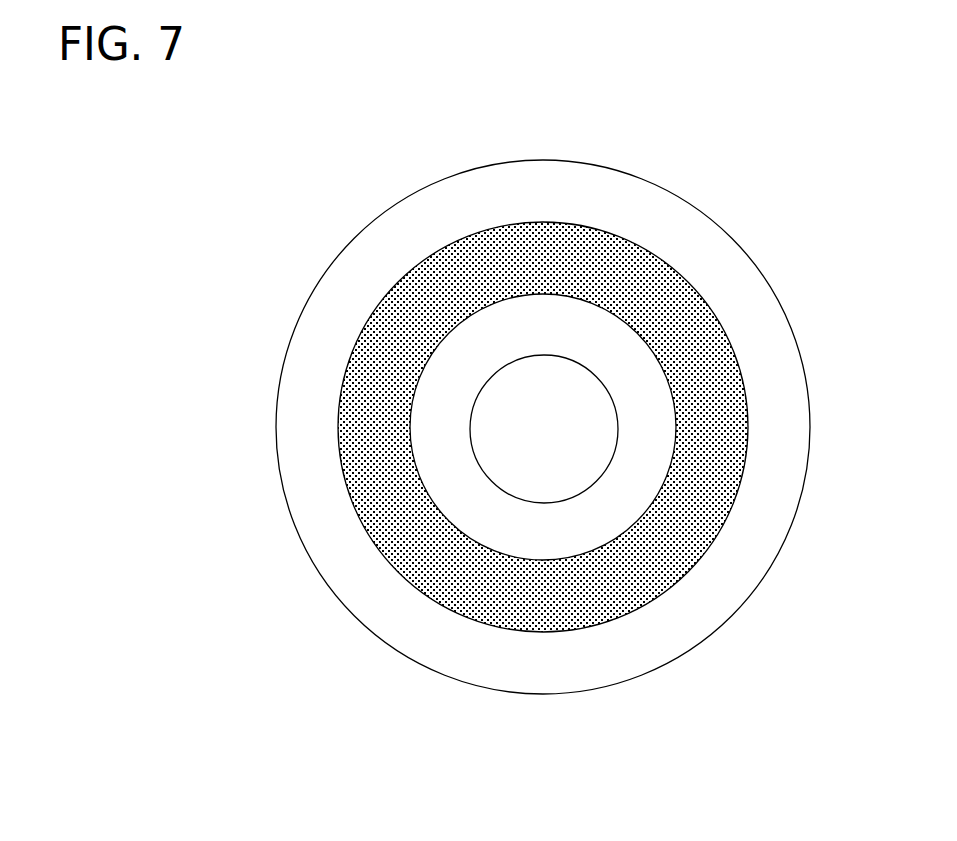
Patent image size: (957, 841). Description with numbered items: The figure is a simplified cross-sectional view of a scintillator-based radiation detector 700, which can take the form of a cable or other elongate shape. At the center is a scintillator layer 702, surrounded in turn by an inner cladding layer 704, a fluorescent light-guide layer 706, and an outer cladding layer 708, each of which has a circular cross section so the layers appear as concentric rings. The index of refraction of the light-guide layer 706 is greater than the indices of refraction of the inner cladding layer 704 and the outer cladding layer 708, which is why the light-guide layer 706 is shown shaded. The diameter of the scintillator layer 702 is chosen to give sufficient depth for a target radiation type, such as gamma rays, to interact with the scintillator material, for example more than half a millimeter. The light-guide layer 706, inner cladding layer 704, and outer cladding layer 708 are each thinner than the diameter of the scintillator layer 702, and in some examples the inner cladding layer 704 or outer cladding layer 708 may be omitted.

The radiation detector 700 is at (746, 152).
The scintillator layer 702 is at (568, 486).
The inner cladding layer 704 is at (568, 544).
The light-guide layer 706 is at (568, 606).
The outer cladding layer 708 is at (568, 674).